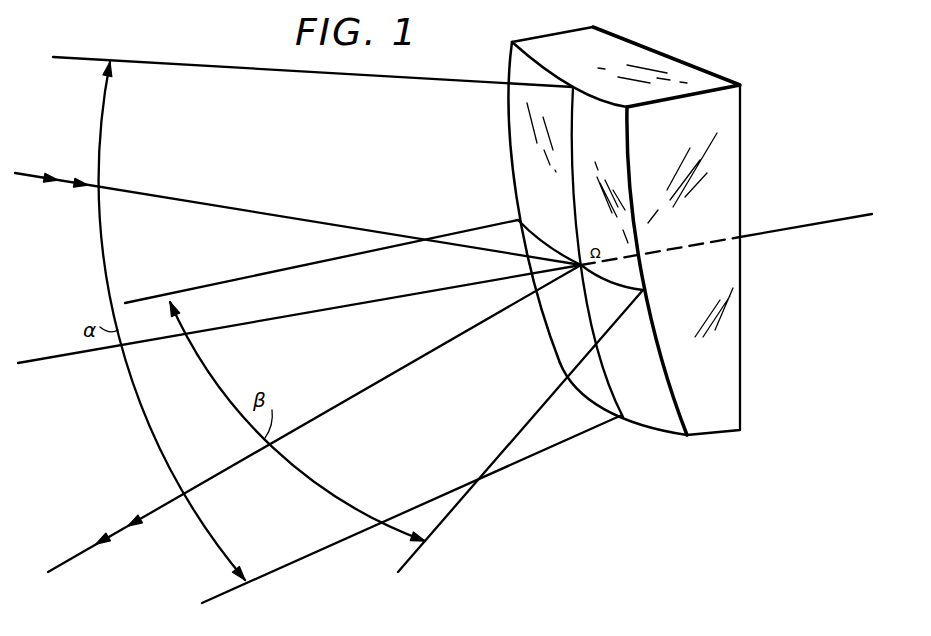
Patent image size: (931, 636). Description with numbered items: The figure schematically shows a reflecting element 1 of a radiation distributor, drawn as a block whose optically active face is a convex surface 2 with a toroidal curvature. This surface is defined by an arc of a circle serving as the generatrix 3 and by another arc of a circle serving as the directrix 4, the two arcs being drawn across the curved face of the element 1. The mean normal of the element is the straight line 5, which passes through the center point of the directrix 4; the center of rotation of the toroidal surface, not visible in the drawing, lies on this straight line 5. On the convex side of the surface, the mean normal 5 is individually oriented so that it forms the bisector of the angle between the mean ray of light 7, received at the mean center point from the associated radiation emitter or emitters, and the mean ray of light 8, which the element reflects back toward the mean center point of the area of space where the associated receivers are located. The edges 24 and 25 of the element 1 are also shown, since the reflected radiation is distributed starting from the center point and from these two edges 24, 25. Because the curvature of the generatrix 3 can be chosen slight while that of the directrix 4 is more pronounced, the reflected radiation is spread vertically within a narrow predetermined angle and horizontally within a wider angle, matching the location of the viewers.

The reflecting element 1 is at (723, 303).
The convex surface 2 is at (660, 420).
The generatrix 3 is at (577, 211).
The directrix 4 is at (545, 245).
The mean normal 5 is at (58, 360).
The mean ray of light received 7 is at (268, 214).
The mean ray of light reflected 8 is at (80, 552).
The edge 24 is at (574, 86).
The edge 25 is at (622, 416).